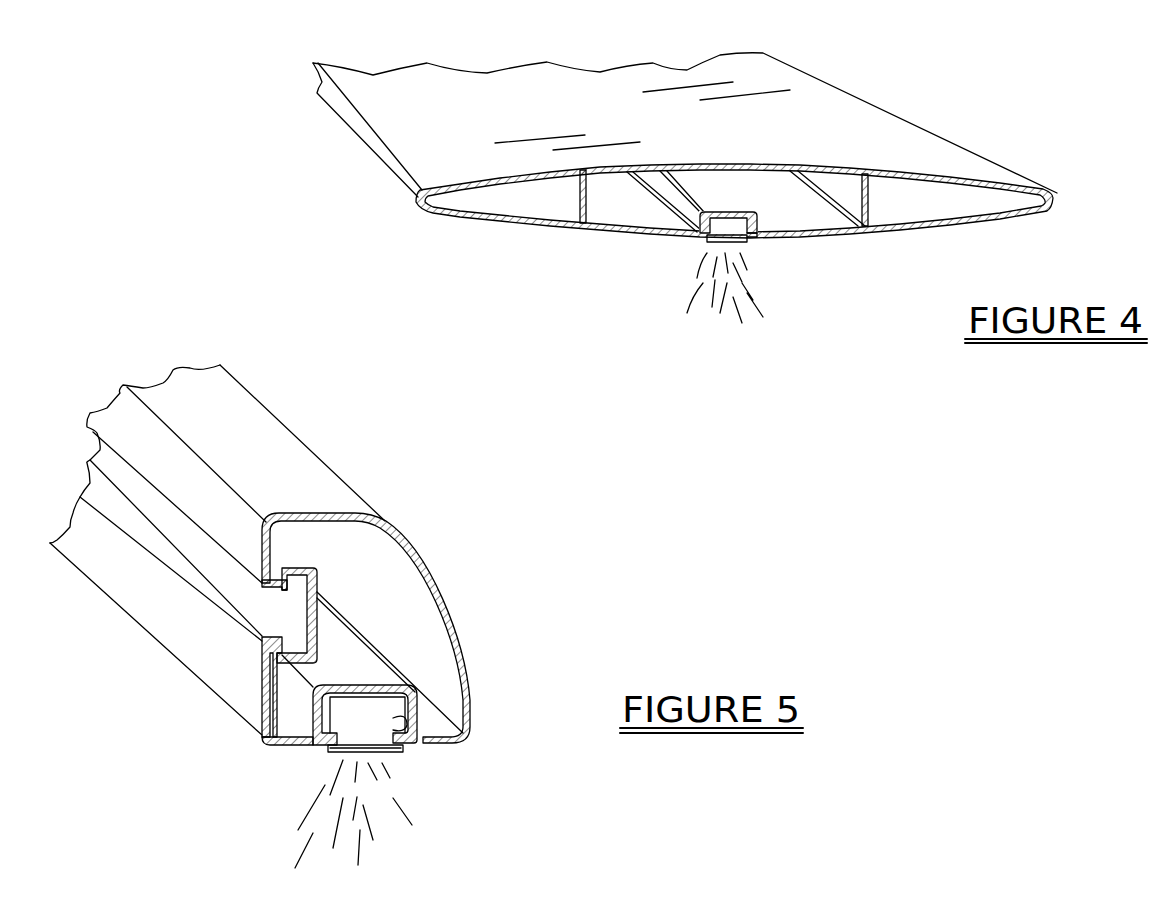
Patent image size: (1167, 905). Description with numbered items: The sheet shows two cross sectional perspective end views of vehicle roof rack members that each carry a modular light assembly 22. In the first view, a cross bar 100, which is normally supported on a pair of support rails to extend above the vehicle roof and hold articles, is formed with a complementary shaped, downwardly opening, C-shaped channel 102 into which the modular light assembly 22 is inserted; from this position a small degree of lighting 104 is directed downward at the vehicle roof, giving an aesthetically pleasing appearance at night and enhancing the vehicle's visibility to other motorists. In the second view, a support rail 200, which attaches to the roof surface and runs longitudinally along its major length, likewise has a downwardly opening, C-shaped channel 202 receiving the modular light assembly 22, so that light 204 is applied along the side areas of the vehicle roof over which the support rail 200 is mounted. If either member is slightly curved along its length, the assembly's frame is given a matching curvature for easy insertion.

In FIG. 4, the cross bar 100 is at (960, 102).
In FIG. 4, the C-shaped channel 102 is at (730, 218).
In FIG. 4, the modular light assembly 22 is at (753, 248).
In FIG. 5, the modular light assembly 22 is at (399, 761).
In FIG. 4, the lighting 104 is at (770, 312).
In FIG. 5, the support rail 200 is at (293, 619).
In FIG. 5, the C-shaped channel 202 is at (400, 750).
In FIG. 5, the light 204 is at (420, 860).